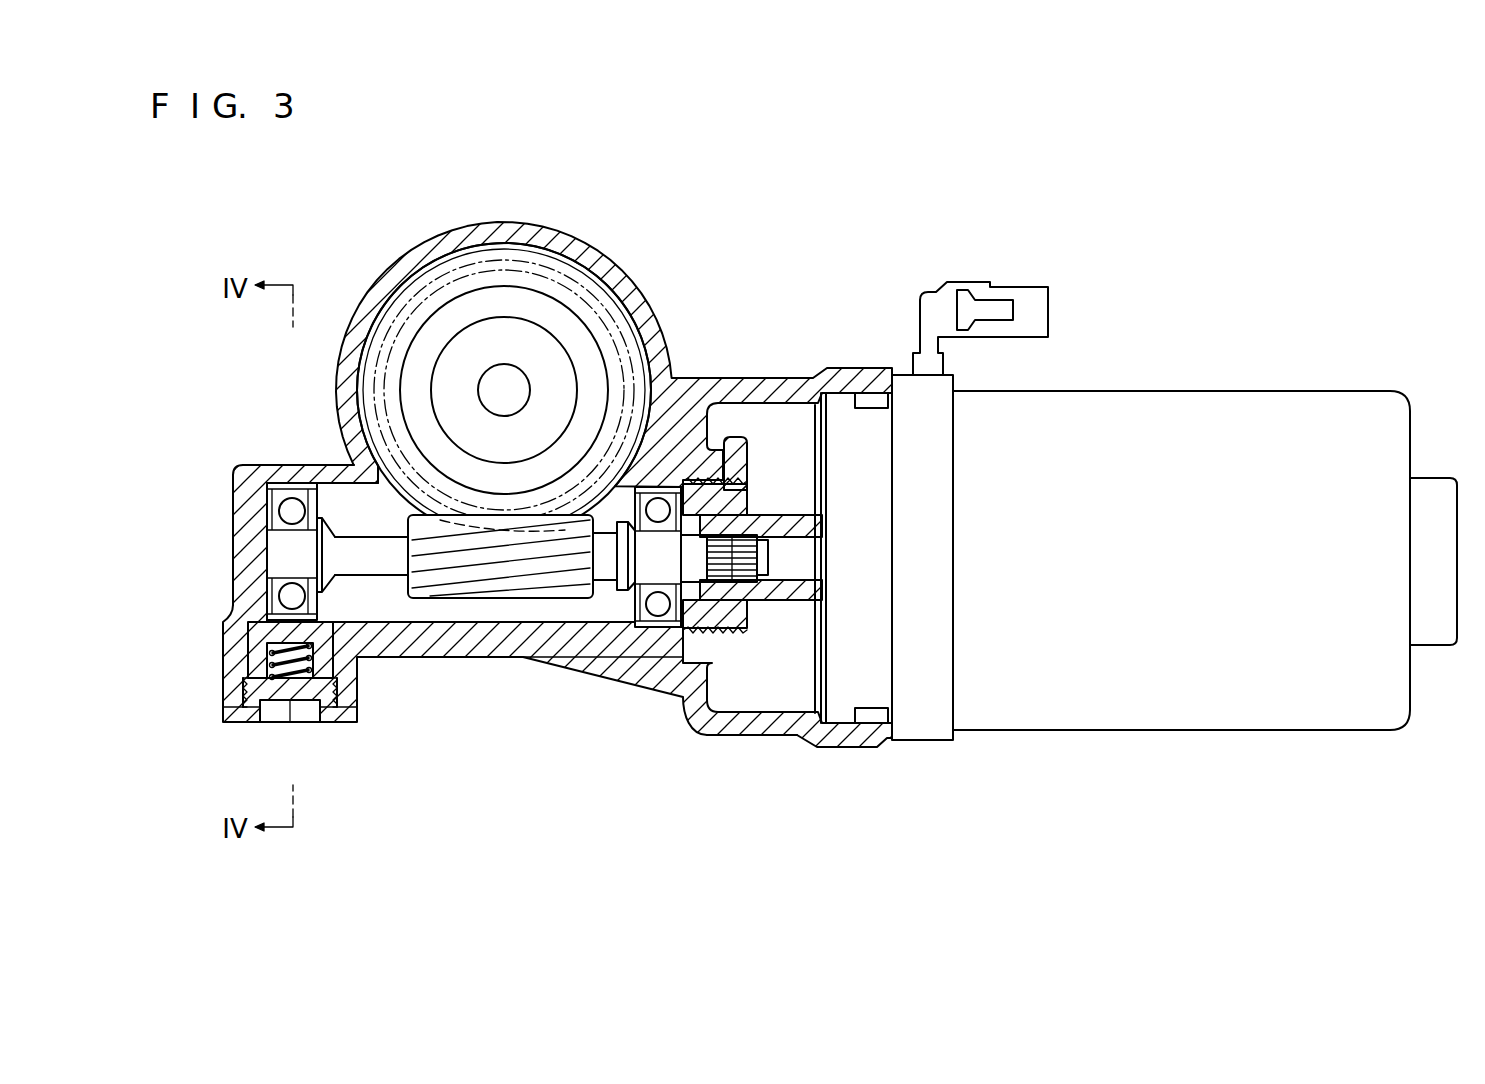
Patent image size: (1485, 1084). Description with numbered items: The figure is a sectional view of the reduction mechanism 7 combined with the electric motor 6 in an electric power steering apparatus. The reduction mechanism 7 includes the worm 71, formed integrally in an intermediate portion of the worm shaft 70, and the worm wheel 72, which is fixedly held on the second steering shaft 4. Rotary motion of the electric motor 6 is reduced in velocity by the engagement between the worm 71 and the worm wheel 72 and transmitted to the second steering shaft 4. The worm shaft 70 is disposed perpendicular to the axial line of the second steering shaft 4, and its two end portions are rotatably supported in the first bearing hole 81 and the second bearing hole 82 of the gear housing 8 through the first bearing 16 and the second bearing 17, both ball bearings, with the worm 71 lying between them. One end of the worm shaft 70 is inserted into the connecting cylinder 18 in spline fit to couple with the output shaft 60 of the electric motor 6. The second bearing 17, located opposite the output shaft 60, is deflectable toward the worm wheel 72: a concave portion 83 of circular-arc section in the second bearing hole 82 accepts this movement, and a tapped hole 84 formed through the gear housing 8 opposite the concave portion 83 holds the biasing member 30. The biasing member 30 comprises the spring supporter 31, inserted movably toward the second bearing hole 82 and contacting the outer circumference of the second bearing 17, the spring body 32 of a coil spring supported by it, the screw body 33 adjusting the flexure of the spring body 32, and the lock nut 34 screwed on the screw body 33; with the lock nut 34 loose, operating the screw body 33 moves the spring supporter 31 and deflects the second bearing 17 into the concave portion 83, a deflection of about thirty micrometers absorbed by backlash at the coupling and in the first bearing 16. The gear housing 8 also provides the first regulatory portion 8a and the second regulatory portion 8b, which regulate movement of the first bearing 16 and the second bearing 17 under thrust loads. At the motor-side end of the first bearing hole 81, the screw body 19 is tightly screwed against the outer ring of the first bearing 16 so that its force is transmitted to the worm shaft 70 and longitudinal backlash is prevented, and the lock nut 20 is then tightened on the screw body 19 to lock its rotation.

The second steering shaft 4 is at (500, 373).
The electric motor 6 is at (1164, 392).
The reduction mechanism 7 is at (497, 600).
The gear housing 8 is at (597, 241).
The first regulatory portion 8a is at (627, 633).
The second regulatory portion 8b is at (243, 478).
The first bearing 16 is at (652, 629).
The second bearing 17 is at (263, 535).
The connecting cylinder 18 is at (785, 602).
The screw body 19 is at (701, 479).
The lock nut 20 is at (740, 438).
The biasing member 30 is at (322, 661).
The spring supporter 31 is at (258, 620).
The spring body 32 is at (268, 662).
The screw body 33 is at (247, 690).
The lock nut 34 is at (228, 725).
The output shaft 60 is at (787, 543).
The worm shaft 70 is at (388, 573).
The worm 71 is at (538, 594).
The worm wheel 72 is at (363, 342).
The first bearing hole 81 is at (713, 736).
The second bearing hole 82 is at (333, 462).
The concave portion 83 is at (280, 478).
The tapped hole 84 is at (322, 722).